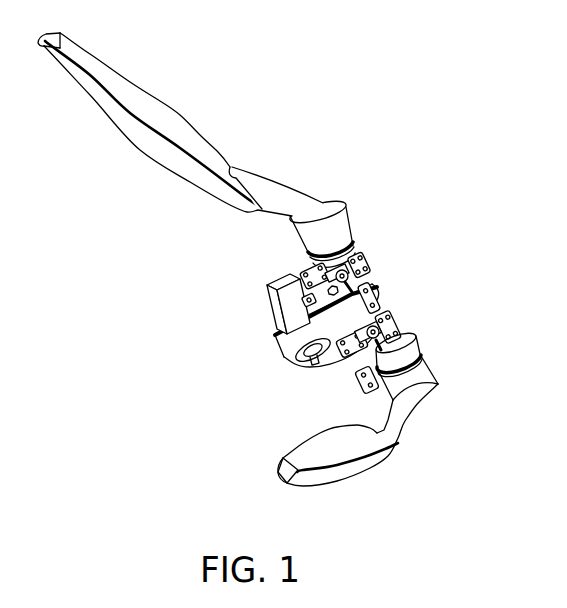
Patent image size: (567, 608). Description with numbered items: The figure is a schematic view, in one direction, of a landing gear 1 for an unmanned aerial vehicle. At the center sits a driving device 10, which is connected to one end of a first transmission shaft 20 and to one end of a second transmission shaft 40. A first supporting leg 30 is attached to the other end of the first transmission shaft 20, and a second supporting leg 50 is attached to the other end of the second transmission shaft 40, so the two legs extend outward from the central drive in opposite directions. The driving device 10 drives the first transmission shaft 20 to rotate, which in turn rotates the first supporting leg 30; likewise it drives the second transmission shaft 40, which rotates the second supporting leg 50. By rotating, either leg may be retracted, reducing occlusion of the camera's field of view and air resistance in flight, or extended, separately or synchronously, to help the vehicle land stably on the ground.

The landing gear 1 is at (252, 44).
The driving device 10 is at (267, 297).
The first transmission shaft 20 is at (303, 258).
The first supporting leg 30 is at (138, 137).
The second transmission shaft 40 is at (390, 337).
The second supporting leg 50 is at (428, 375).